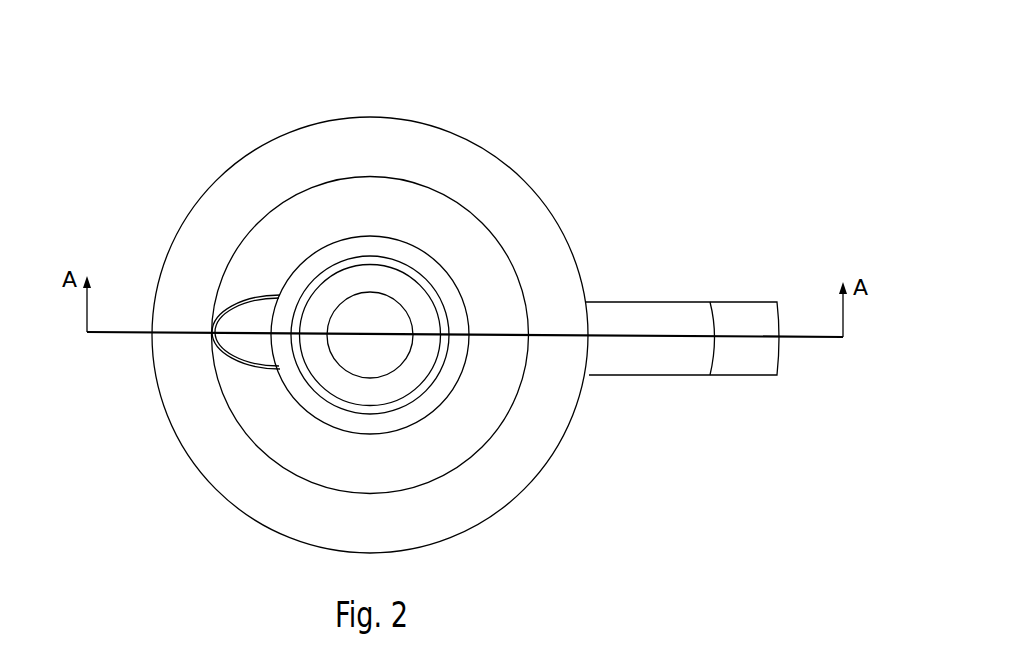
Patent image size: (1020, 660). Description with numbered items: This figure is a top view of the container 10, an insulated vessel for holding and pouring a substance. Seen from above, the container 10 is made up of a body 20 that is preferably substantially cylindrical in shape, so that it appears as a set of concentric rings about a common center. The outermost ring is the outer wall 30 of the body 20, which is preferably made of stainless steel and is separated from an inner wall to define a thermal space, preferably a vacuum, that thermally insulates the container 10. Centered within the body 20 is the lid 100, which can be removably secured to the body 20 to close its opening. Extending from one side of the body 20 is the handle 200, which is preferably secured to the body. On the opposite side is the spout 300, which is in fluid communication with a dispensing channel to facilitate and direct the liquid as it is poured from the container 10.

The container 10 is at (647, 108).
The body 20 is at (575, 231).
The outer wall 30 is at (447, 158).
The lid 100 is at (345, 351).
The handle 200 is at (725, 295).
The spout 300 is at (240, 347).